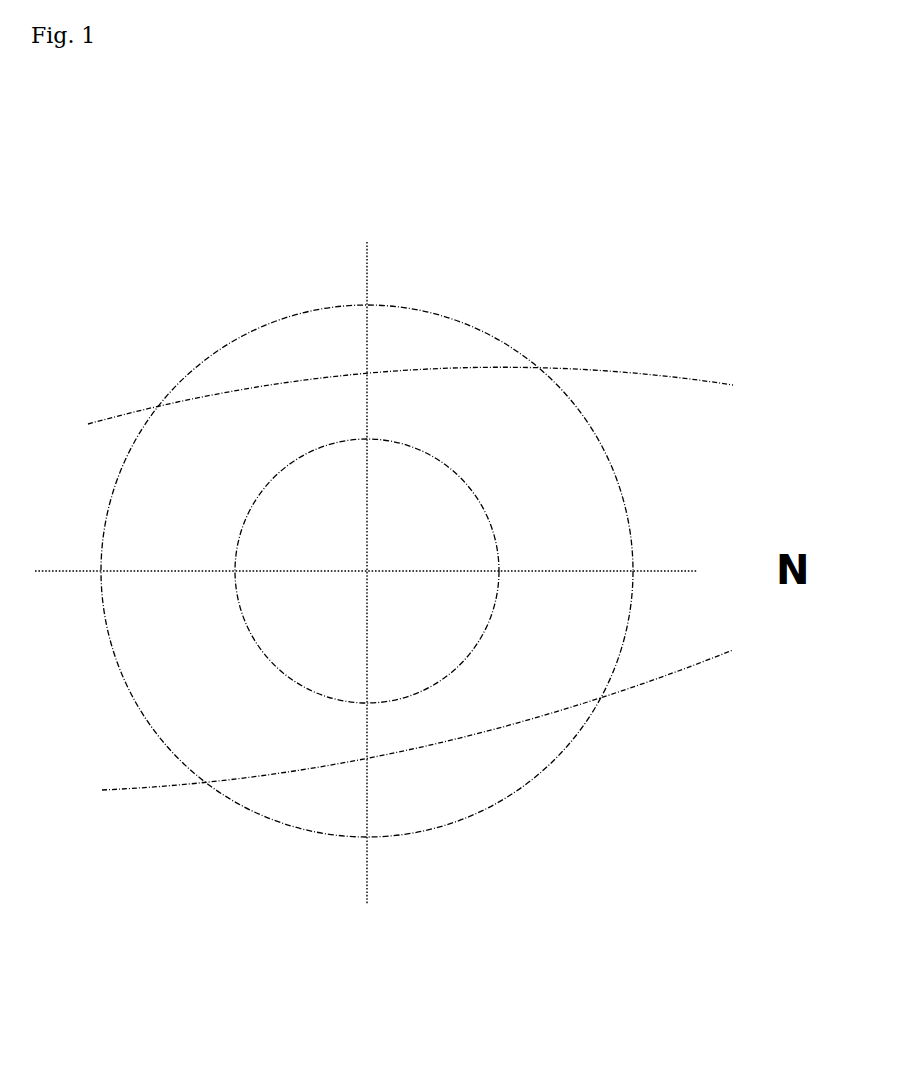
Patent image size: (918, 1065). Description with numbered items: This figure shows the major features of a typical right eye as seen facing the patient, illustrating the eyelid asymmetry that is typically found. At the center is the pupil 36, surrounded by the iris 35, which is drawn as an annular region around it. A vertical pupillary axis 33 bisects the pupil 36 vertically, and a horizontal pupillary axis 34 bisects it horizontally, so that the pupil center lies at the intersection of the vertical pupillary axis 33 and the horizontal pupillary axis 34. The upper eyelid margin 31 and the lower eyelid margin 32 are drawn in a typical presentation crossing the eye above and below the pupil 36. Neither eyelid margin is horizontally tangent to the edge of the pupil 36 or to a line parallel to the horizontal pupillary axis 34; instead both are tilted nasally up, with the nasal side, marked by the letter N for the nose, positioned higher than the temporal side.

The upper eyelid margin 31 is at (552, 353).
The lower eyelid margin 32 is at (588, 644).
The vertical pupillary axis 33 is at (346, 250).
The horizontal pupillary axis 34 is at (608, 528).
The iris 35 is at (523, 480).
The pupil 36 is at (393, 621).